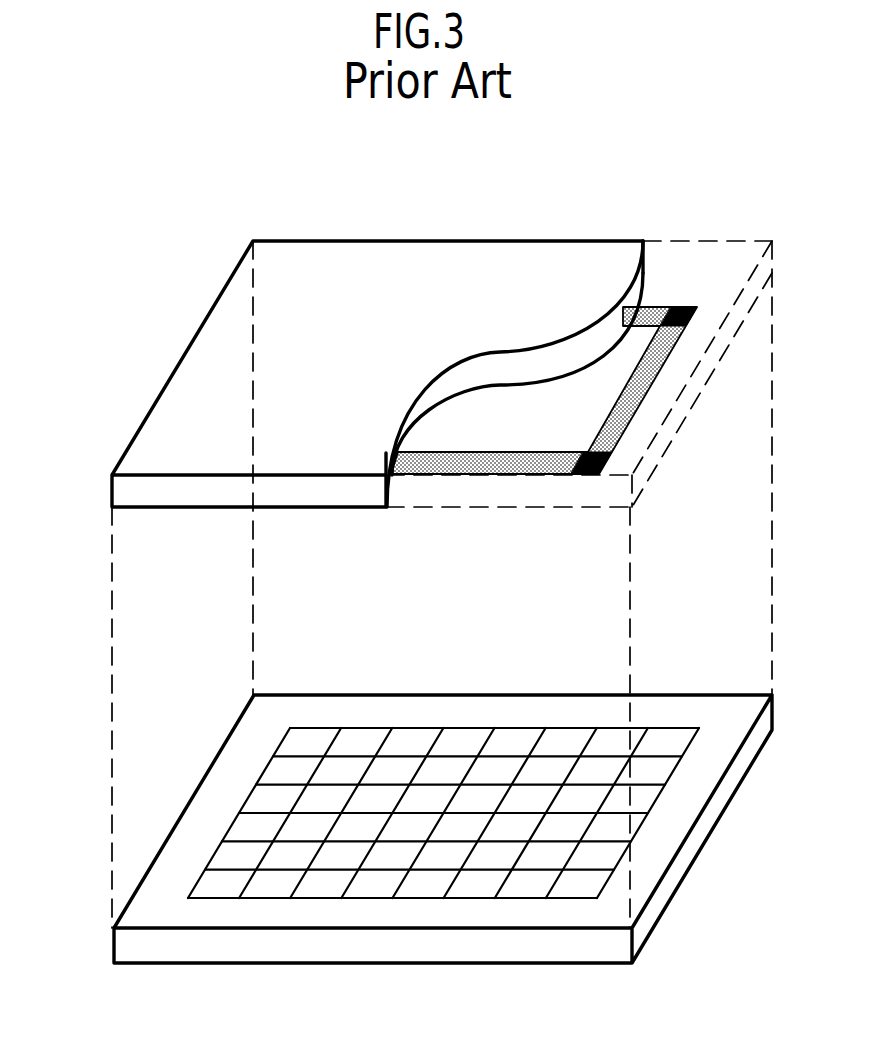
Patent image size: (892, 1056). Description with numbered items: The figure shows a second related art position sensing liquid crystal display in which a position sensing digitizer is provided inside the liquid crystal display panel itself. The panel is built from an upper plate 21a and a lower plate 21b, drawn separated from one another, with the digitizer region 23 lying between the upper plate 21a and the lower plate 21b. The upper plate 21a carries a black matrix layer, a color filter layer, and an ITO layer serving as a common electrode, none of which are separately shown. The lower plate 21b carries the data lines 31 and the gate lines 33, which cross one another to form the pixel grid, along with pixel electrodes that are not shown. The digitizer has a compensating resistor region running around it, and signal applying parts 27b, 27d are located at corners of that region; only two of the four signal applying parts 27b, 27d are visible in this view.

The upper plate 21a is at (422, 374).
The lower plate 21b is at (395, 829).
The sealant tape 23 is at (572, 390).
The signal applying part 27b is at (735, 322).
The signal applying part 27d is at (654, 473).
The data lines 31 is at (418, 808).
The gate lines 33 is at (387, 796).